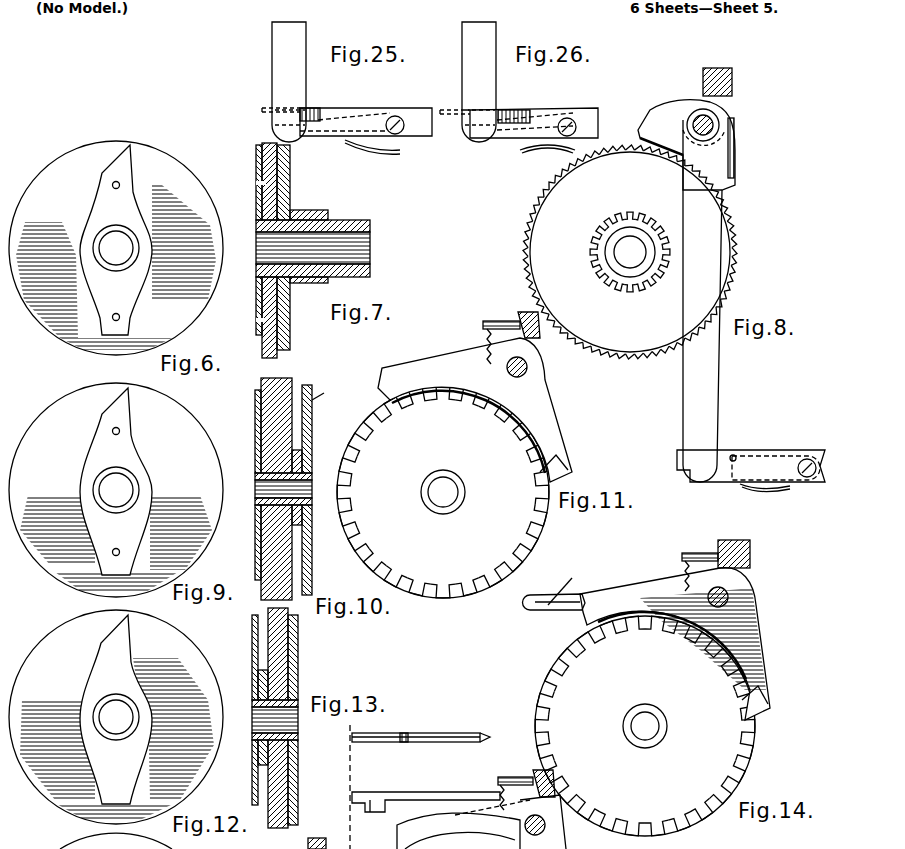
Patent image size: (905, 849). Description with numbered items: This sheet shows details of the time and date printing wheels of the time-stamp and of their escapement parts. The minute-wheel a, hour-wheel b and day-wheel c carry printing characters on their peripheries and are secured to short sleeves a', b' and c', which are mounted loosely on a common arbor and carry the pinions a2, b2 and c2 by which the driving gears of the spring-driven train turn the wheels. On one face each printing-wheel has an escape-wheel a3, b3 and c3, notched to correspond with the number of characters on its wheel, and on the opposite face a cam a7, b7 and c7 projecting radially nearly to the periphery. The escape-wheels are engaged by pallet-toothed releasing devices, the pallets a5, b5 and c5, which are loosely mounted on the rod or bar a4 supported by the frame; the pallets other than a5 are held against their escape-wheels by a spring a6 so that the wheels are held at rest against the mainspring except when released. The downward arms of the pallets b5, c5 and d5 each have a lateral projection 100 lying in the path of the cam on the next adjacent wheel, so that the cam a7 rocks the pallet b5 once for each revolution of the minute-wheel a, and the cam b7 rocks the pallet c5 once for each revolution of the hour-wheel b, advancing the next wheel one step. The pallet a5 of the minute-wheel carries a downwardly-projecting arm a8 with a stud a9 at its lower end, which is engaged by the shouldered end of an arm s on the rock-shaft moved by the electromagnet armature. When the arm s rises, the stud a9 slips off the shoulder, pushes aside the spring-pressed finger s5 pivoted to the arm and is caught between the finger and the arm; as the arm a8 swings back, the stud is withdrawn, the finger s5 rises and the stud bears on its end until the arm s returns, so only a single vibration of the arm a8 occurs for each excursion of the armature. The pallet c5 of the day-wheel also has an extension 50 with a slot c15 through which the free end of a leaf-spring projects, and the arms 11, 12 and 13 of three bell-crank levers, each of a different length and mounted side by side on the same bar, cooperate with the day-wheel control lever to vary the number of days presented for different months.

In FIG. 6, the minute-wheel a is at (116, 248).
In FIG. 8, the minute-wheel a is at (615, 233).
In FIG. 10, the minute-wheel a is at (248, 471).
In FIG. 7, the sleeve a' is at (329, 236).
In FIG. 7, the pinion a2 is at (305, 213).
In FIG. 8, the pinion a2 is at (627, 285).
In FIG. 7, the escape-wheel a3 is at (290, 153).
In FIG. 8, the escape-wheel a3 is at (630, 252).
In FIG. 8, the rod or bar a4 is at (713, 125).
In FIG. 11, the rod or bar a4 is at (527, 368).
In FIG. 14, the rod or bar a4 is at (728, 597).
In FIG. 8, the pallet a5 is at (660, 120).
In FIG. 11, the spring a6 is at (482, 340).
In FIG. 6, the cam a7 is at (131, 165).
In FIG. 7, the cam a7 is at (258, 330).
In FIG. 25, the downwardly-projecting arm a8 is at (300, 104).
In FIG. 26, the downwardly-projecting arm a8 is at (490, 88).
In FIG. 25, the pin or stud a9 is at (270, 133).
In FIG. 26, the pin or stud a9 is at (468, 138).
In FIG. 8, the pin or stud a9 is at (720, 382).
In FIG. 9, the hour-wheel b is at (116, 490).
In FIG. 10, the hour-wheel b is at (259, 489).
In FIG. 9, the sleeve b' is at (116, 504).
In FIG. 10, the sleeve b' is at (263, 466).
In FIG. 11, the sleeve b' is at (443, 511).
In FIG. 10, the pinion b2 is at (312, 432).
In FIG. 10, the escape-wheel b3 is at (329, 387).
In FIG. 11, the escape-wheel b3 is at (443, 492).
In FIG. 11, the pallet b5 is at (428, 362).
In FIG. 9, the cam b7 is at (126, 442).
In FIG. 10, the cam b7 is at (258, 406).
In FIG. 12, the day-wheel c is at (116, 717).
In FIG. 13, the day-wheel c is at (242, 710).
In FIG. 12, the sleeve c' is at (90, 717).
In FIG. 13, the sleeve c' is at (263, 720).
In FIG. 14, the sleeve c' is at (663, 726).
In FIG. 13, the pinion c2 is at (290, 668).
In FIG. 13, the escape-wheel c3 is at (288, 790).
In FIG. 14, the escape-wheel c3 is at (644, 725).
In FIG. 14, the pallet c5 is at (632, 586).
In FIG. 12, the cam c7 is at (116, 709).
In FIG. 14, the slot c15 is at (548, 618).
In FIG. 25, the arm s is at (402, 108).
In FIG. 26, the arm s is at (582, 108).
In FIG. 8, the arm s is at (766, 452).
In FIG. 25, the spring-pressed finger s5 is at (352, 120).
In FIG. 26, the spring-pressed finger s5 is at (508, 148).
In FIG. 8, the spring-pressed finger s5 is at (728, 483).
In FIG. 14, the extension 50 is at (569, 580).
In FIG. 11, the lateral projection 100 is at (560, 470).
In FIG. 14, the lateral projection 100 is at (766, 705).
In FIG. 14, the pallet d5 is at (425, 830).
In FIG. 14, the arm of bell-crank lever 11 is at (372, 742).
In FIG. 14, the arm of bell-crank lever 12 is at (385, 742).
In FIG. 14, the arm of bell-crank lever 13 is at (382, 740).